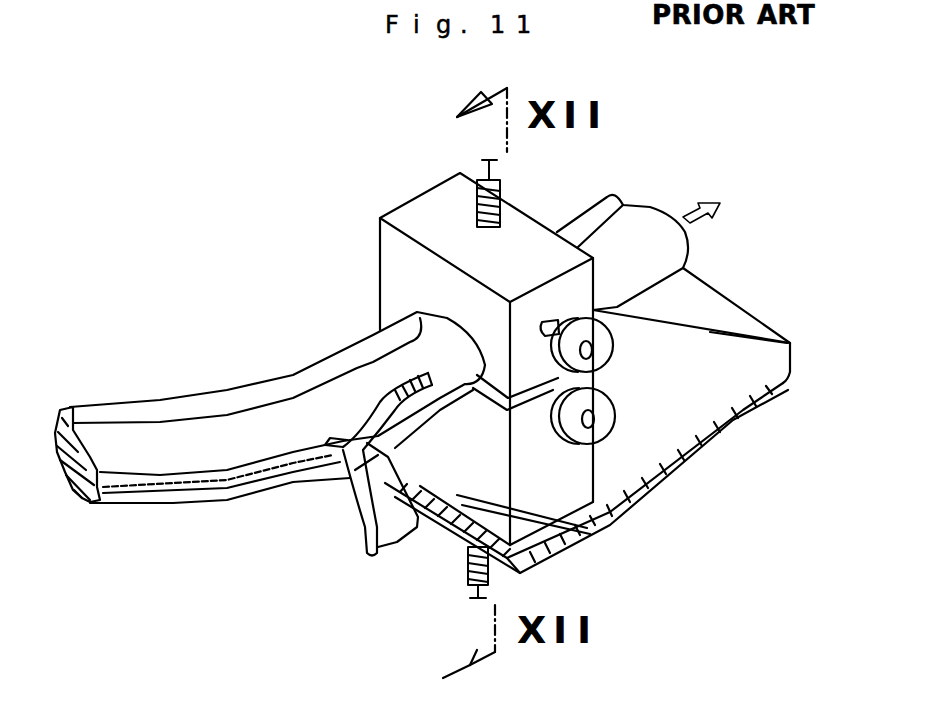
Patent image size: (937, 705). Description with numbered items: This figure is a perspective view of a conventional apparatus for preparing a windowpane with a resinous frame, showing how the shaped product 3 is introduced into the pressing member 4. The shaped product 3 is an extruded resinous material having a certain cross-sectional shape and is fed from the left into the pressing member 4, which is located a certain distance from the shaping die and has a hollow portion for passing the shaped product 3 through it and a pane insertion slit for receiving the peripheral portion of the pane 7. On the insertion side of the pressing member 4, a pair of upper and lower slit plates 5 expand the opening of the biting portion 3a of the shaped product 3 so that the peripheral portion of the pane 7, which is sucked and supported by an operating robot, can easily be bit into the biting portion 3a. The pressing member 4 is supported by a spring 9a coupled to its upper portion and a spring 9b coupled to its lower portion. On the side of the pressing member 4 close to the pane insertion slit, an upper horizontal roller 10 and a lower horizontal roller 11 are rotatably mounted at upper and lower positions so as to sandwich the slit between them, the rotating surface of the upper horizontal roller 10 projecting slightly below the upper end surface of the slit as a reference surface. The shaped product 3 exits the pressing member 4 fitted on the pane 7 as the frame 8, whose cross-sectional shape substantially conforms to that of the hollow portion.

The shaped product 3 is at (198, 433).
The biting portion 3a is at (175, 500).
The pressing member 4 is at (400, 208).
The slit plates 5 is at (375, 440).
The pane 7 is at (630, 468).
The frame 8 is at (627, 200).
The spring 9a is at (500, 190).
The spring 9b is at (468, 570).
The upper horizontal roller 10 is at (605, 343).
The lower horizontal roller 11 is at (600, 428).